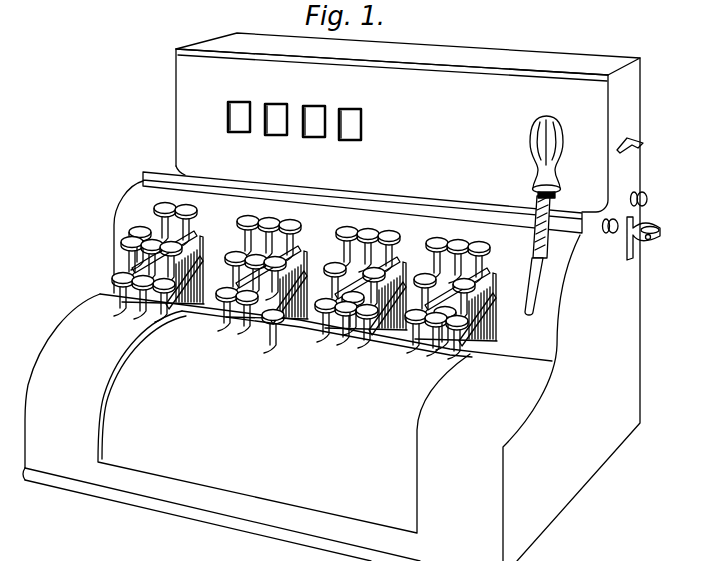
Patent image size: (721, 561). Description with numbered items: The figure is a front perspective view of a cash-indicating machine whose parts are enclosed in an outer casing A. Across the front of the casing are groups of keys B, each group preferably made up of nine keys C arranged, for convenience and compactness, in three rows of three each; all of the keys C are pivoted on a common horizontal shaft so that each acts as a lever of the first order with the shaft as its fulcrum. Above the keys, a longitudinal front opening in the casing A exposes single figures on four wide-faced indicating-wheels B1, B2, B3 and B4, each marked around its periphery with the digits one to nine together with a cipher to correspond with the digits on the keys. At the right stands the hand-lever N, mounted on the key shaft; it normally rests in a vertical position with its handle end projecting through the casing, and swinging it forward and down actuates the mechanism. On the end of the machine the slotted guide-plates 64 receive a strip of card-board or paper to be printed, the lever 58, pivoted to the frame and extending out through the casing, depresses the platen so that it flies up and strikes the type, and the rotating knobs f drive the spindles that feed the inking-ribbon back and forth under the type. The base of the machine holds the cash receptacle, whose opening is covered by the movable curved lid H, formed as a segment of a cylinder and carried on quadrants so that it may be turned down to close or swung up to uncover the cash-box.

The outer casing A is at (377, 297).
The groups of keys B is at (301, 273).
The keys C is at (317, 299).
The indicating-wheel B1 is at (347, 109).
The indicating-wheel B2 is at (310, 106).
The indicating-wheel B3 is at (272, 104).
The indicating-wheel B4 is at (235, 103).
The curved lid H is at (287, 427).
The hand-lever N is at (549, 204).
The guide-plates 64 is at (643, 146).
The rotating knobs f is at (606, 233).
The lever 58 is at (658, 238).